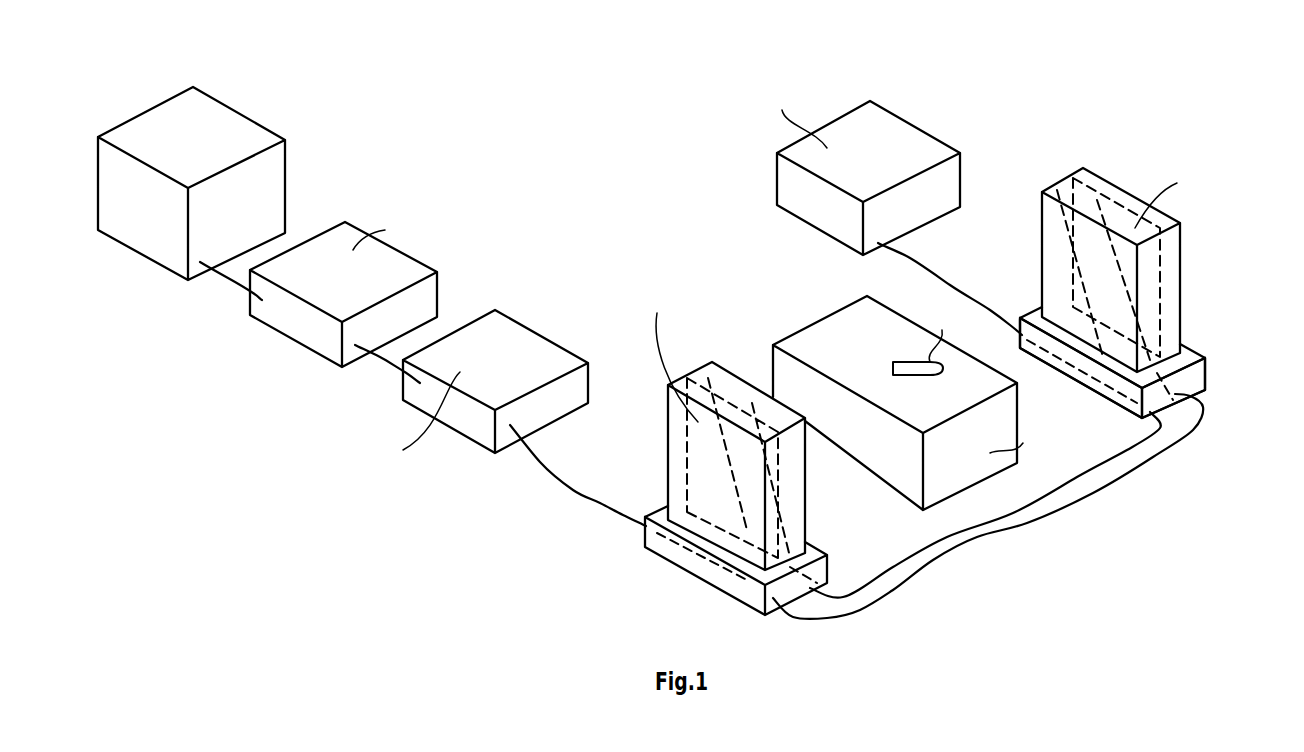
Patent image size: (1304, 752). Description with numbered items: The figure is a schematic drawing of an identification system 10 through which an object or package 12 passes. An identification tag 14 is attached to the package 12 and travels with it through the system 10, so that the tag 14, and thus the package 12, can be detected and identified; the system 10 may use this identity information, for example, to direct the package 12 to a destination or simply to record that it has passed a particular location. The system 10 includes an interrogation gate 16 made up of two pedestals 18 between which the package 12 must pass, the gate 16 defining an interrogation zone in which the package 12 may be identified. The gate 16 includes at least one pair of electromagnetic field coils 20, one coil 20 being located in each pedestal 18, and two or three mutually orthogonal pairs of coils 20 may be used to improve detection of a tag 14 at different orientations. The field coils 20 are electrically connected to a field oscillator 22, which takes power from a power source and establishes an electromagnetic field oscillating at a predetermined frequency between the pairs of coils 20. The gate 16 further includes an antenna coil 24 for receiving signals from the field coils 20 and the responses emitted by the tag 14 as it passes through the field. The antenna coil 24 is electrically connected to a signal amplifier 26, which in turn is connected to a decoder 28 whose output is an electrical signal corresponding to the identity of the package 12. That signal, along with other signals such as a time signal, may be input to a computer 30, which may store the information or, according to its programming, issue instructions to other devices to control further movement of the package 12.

The identification system 10 is at (1037, 140).
The object or package 12 is at (843, 357).
The identification tag 14 is at (905, 375).
The interrogation gate 16 is at (1200, 330).
The pedestal 18 is at (670, 485).
The electromagnetic field coil 20 is at (727, 387).
The field oscillator 22 is at (877, 166).
The antenna coil 24 is at (685, 430).
The signal amplifier 26 is at (510, 391).
The decoder 28 is at (348, 297).
The computer 30 is at (135, 202).